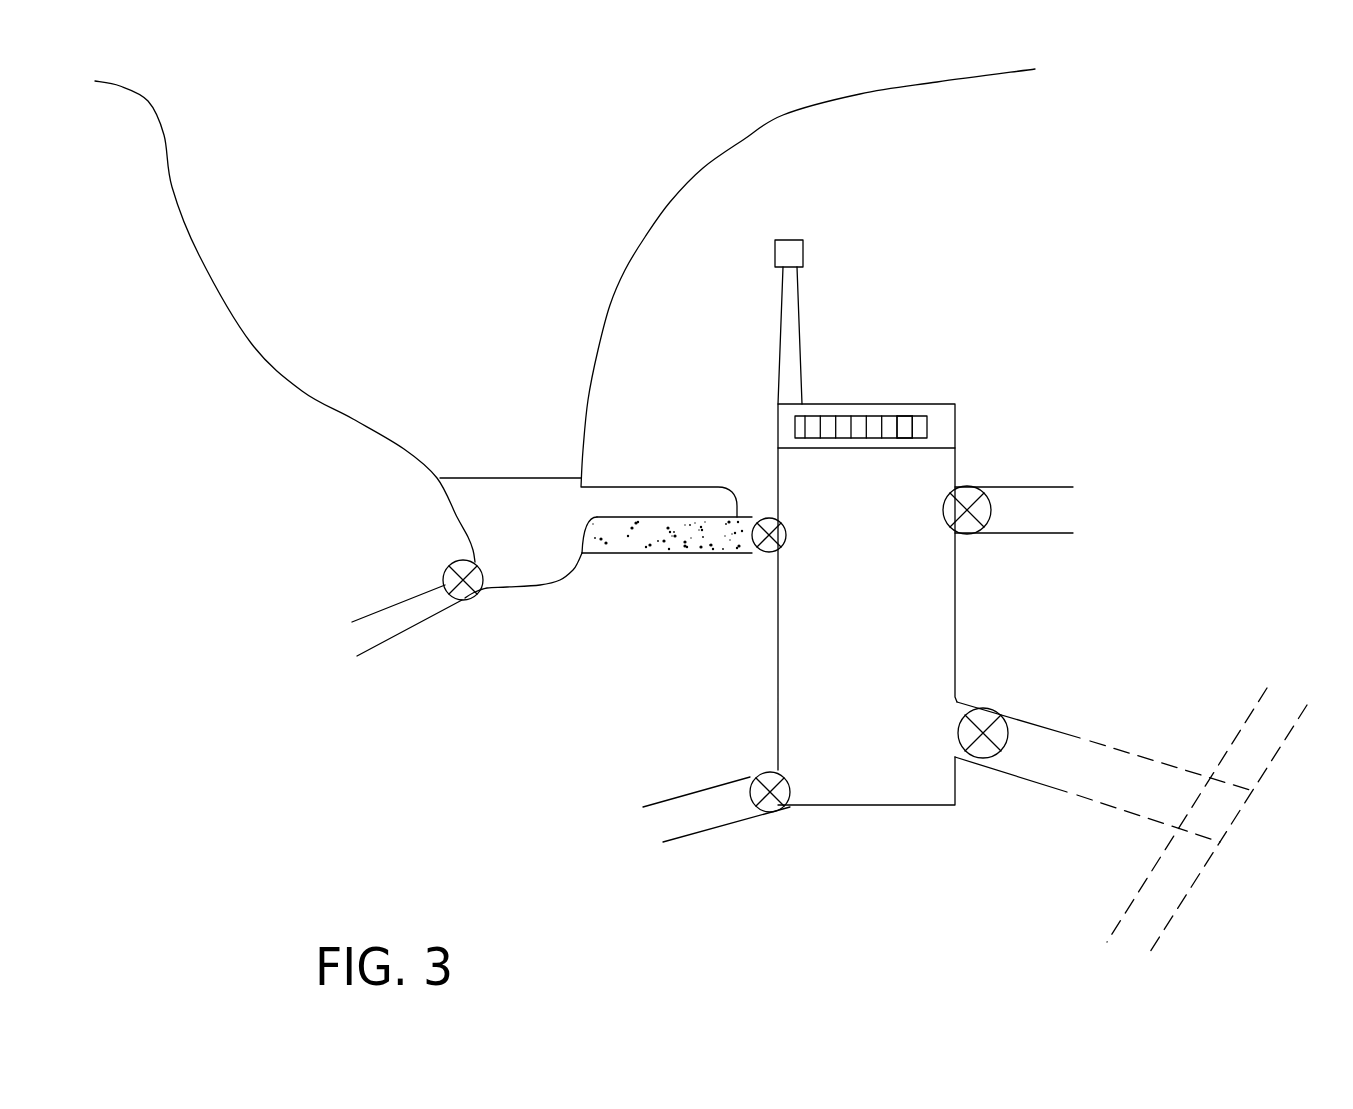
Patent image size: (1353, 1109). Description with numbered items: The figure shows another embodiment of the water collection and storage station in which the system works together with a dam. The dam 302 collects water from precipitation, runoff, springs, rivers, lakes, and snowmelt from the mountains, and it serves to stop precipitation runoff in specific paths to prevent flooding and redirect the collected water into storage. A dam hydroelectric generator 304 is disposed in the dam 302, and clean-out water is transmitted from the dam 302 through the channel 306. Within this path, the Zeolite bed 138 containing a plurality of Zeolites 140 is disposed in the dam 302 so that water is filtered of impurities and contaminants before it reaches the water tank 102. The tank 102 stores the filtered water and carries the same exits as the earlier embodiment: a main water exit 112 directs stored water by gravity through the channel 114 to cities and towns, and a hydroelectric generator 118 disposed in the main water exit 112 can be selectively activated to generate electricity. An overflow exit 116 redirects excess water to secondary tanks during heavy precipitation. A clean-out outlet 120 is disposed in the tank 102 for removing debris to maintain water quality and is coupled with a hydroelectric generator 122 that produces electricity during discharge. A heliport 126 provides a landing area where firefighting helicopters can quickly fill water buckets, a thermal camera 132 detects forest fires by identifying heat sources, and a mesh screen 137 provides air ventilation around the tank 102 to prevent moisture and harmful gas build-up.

The water tank 102 is at (836, 637).
The main water exit 112 is at (962, 708).
The channel 114 is at (1135, 918).
The overflow exit 116 is at (1035, 515).
The hydroelectric generator 118 is at (1002, 728).
The clean-out outlet 120 is at (660, 823).
The second hydroelectric generator 122 is at (798, 780).
The heliport 126 is at (872, 405).
The thermal camera 132 is at (800, 260).
The screen 137 is at (903, 418).
The Zeolite filtered bed 138 is at (652, 553).
The Zeolite 140 is at (615, 532).
The dam 302 is at (525, 548).
The dam hydroelectric generator 304 is at (463, 600).
The channel 306 is at (730, 538).